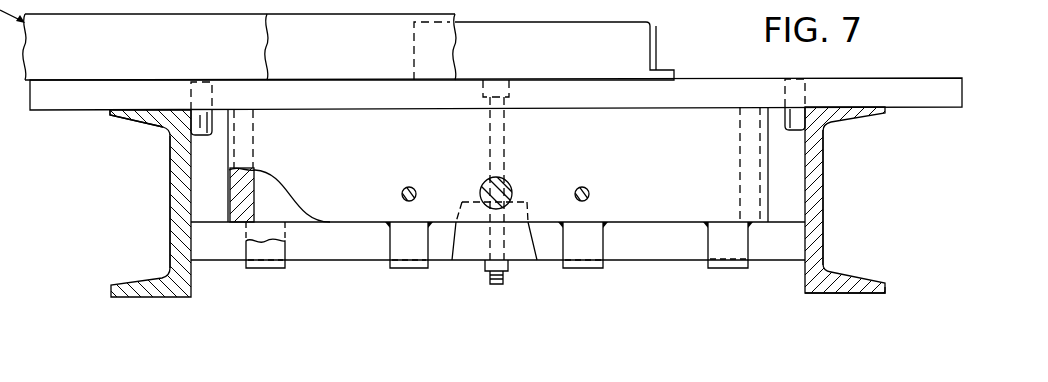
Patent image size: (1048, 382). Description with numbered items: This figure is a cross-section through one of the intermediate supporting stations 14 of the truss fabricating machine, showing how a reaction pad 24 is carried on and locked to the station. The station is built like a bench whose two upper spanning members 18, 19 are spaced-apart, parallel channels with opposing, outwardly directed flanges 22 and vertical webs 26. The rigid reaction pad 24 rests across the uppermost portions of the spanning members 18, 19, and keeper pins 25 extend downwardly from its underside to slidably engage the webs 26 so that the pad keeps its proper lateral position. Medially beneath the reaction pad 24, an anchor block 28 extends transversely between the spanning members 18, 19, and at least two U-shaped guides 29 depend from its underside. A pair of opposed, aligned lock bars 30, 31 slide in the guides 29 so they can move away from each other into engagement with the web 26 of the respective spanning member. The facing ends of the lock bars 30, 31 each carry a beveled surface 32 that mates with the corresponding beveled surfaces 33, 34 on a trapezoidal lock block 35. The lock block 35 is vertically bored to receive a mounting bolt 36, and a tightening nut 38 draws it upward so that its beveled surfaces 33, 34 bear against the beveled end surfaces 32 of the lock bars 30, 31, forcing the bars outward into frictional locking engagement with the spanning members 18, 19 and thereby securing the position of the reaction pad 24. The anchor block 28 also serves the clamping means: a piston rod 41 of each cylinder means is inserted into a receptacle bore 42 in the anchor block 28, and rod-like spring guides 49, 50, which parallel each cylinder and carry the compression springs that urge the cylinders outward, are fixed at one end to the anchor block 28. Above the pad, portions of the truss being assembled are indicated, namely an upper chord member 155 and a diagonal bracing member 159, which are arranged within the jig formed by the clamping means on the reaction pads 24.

The intermediate supporting station 14 is at (928, 50).
The spanning member 18 is at (125, 272).
The spanning member 19 is at (873, 265).
The flange 22 is at (107, 117).
The reaction pad 24 is at (945, 90).
The keeper pin 25 is at (198, 120).
The web 26 is at (173, 192).
The anchor block 28 is at (701, 160).
The U-shaped guide 29 is at (273, 271).
The lock bar 30 is at (357, 253).
The lock bar 31 is at (675, 253).
The beveled surface 32 is at (531, 238).
The beveled surface 33 is at (530, 245).
The beveled surface 34 is at (466, 242).
The lock block 35 is at (530, 257).
The mounting bolt 36 is at (494, 285).
The tightening nut 38 is at (483, 263).
The piston rod 41 is at (505, 181).
The receptacle bore 42 is at (488, 182).
The spring guide 49 is at (590, 194).
The spring guide 50 is at (401, 193).
The upper chord member 155 is at (373, 60).
The diagonal bracing member 159 is at (192, 52).